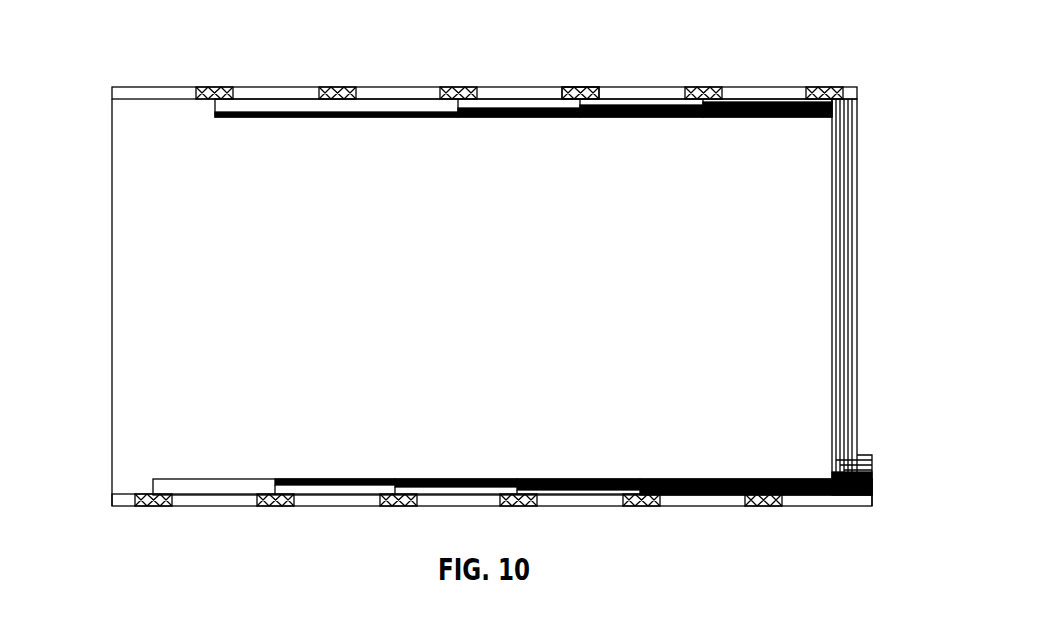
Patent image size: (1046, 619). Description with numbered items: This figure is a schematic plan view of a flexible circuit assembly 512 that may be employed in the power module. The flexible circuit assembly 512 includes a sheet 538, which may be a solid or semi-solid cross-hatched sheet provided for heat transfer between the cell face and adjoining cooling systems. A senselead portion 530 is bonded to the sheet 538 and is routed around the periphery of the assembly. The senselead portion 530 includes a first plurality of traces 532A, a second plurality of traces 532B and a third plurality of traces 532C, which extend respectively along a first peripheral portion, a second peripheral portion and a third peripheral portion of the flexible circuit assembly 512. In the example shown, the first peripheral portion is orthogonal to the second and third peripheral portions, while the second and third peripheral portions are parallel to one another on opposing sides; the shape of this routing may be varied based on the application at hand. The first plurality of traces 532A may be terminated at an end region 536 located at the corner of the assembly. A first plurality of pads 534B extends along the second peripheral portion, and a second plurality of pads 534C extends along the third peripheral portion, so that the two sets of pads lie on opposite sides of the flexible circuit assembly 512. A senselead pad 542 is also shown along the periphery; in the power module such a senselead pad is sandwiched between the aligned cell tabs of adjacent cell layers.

The flexible circuit assembly 512 is at (106, 193).
The senselead portion 530 is at (551, 302).
The first plurality of traces 532A is at (804, 244).
The second plurality of traces 532B is at (462, 466).
The third plurality of traces 532C is at (452, 128).
The first plurality of pads 534B is at (640, 507).
The second plurality of pads 534C is at (215, 87).
The end region 536 is at (890, 474).
The sheet 538 is at (513, 310).
The senselead pad 542 is at (582, 87).